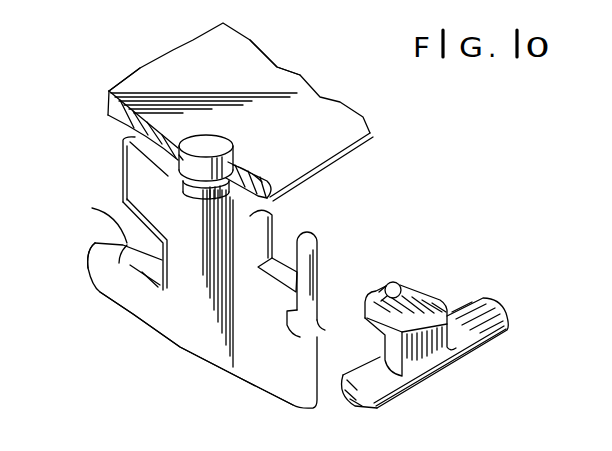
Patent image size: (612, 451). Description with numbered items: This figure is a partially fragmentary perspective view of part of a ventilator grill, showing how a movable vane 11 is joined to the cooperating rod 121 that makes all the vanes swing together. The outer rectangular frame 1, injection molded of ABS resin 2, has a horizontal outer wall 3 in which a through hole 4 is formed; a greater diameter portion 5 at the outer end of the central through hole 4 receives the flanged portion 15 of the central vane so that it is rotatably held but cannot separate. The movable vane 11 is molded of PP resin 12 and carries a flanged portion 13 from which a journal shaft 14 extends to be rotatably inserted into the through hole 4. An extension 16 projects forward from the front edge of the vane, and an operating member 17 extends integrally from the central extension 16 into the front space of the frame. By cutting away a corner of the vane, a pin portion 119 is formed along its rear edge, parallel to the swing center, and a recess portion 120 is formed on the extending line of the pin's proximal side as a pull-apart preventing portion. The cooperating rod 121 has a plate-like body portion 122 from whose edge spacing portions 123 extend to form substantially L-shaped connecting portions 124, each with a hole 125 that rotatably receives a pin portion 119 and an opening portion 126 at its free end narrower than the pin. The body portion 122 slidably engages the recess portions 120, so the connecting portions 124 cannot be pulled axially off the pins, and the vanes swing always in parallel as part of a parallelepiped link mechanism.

The outer rectangular frame 1 is at (61, 34).
The ABS resin 2 is at (124, 79).
The horizontal outer wall 3 is at (290, 83).
The through hole 4 is at (247, 180).
The greater diameter portion 5 is at (232, 168).
The movable vane 11 is at (139, 379).
The PP resin 12 is at (196, 348).
The flanged portion 13 is at (205, 203).
The journal shaft 14 is at (200, 188).
The flanged portion 15 is at (180, 163).
The extension 16 is at (123, 203).
The operating member 17 is at (95, 243).
The pin portion 119 is at (312, 232).
The recess portion 120 is at (325, 330).
The cooperating rod 121 is at (498, 305).
The body portion 122 is at (477, 333).
The spacing portion 123 is at (418, 362).
The connecting portion 124 is at (420, 295).
The hole 125 is at (372, 219).
The opening portion 126 is at (325, 248).